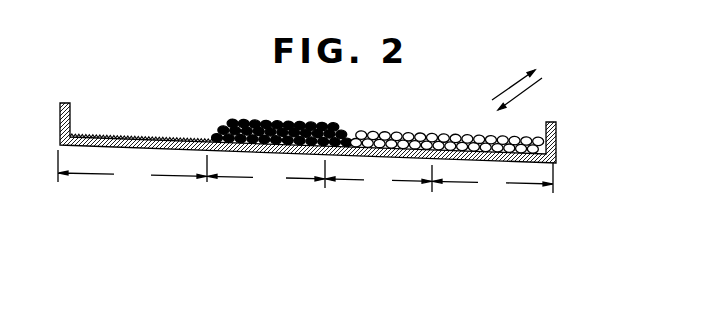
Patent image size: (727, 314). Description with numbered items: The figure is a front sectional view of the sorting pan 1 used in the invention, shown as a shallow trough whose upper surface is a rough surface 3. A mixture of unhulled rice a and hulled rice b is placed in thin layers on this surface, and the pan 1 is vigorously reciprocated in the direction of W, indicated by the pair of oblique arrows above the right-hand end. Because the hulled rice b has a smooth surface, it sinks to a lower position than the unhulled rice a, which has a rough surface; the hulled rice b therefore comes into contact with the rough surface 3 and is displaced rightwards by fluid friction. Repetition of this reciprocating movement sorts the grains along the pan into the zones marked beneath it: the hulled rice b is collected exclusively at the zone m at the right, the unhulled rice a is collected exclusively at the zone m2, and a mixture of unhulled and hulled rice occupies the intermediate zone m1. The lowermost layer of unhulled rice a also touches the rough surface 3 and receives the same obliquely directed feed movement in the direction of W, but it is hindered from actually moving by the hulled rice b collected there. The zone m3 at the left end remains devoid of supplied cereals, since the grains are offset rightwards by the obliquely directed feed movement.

The pan 1 is at (113, 136).
The rough surface 3 is at (157, 136).
The unhulled rice a is at (267, 123).
The hulled rice b is at (441, 129).
The direction of reciprocation W is at (528, 84).
The zone m3 is at (132, 166).
The zone m2 is at (266, 174).
The zone m1 is at (378, 178).
The zone m is at (492, 178).